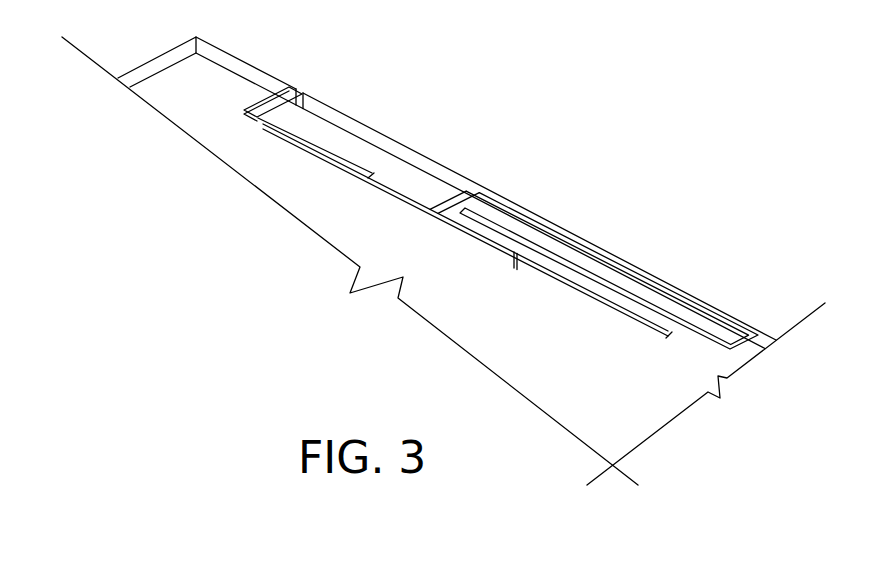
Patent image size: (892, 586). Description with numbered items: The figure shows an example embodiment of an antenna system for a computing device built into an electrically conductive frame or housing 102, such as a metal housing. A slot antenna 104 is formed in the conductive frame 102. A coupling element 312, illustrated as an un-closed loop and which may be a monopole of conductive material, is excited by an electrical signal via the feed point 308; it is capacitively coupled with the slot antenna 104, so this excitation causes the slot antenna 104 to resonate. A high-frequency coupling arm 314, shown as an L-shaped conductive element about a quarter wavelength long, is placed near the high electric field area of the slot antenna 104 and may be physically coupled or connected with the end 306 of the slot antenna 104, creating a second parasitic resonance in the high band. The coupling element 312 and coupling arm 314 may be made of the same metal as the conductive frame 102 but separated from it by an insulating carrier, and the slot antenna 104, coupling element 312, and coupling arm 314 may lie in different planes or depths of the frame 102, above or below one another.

The conductive frame or housing 102 is at (165, 53).
The slot antenna 104 is at (413, 206).
The end of the slot antenna 306 is at (297, 88).
The feed point 308 is at (515, 259).
The coupling element 312 is at (578, 240).
The high-frequency coupling arm 314 is at (245, 112).